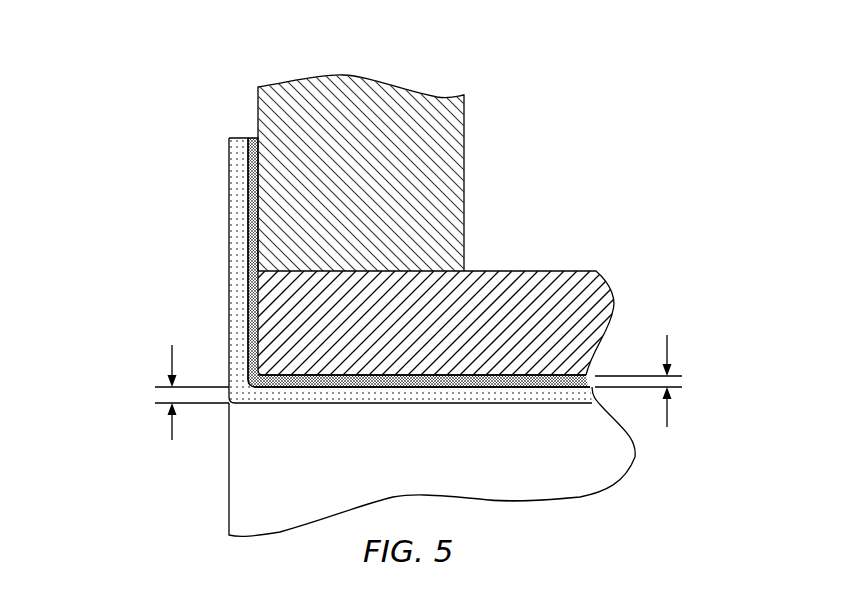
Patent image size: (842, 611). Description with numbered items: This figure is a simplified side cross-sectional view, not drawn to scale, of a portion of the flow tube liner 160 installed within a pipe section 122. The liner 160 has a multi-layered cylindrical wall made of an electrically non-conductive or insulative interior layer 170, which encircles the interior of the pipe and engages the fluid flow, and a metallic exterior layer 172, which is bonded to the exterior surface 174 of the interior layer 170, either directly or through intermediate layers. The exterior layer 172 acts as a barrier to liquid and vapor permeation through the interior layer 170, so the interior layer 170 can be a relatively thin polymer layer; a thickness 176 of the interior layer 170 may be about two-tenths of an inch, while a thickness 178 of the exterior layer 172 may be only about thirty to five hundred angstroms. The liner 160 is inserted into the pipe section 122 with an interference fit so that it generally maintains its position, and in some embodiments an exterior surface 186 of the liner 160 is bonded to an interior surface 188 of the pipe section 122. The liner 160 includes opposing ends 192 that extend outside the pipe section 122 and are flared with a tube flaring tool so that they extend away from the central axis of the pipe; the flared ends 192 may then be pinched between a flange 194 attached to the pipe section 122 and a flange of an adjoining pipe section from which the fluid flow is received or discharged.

The flow tube liner 160 is at (158, 220).
The interior layer 170 is at (405, 393).
The exterior layer 172 is at (243, 160).
The exterior surface 174 is at (558, 374).
The thickness 176 is at (172, 355).
The thickness 178 is at (667, 347).
The exterior surface 186 is at (502, 360).
The interior surface 188 is at (535, 399).
The ends 192 is at (232, 277).
The flange 194 is at (442, 150).
The pipe section 122 is at (607, 283).